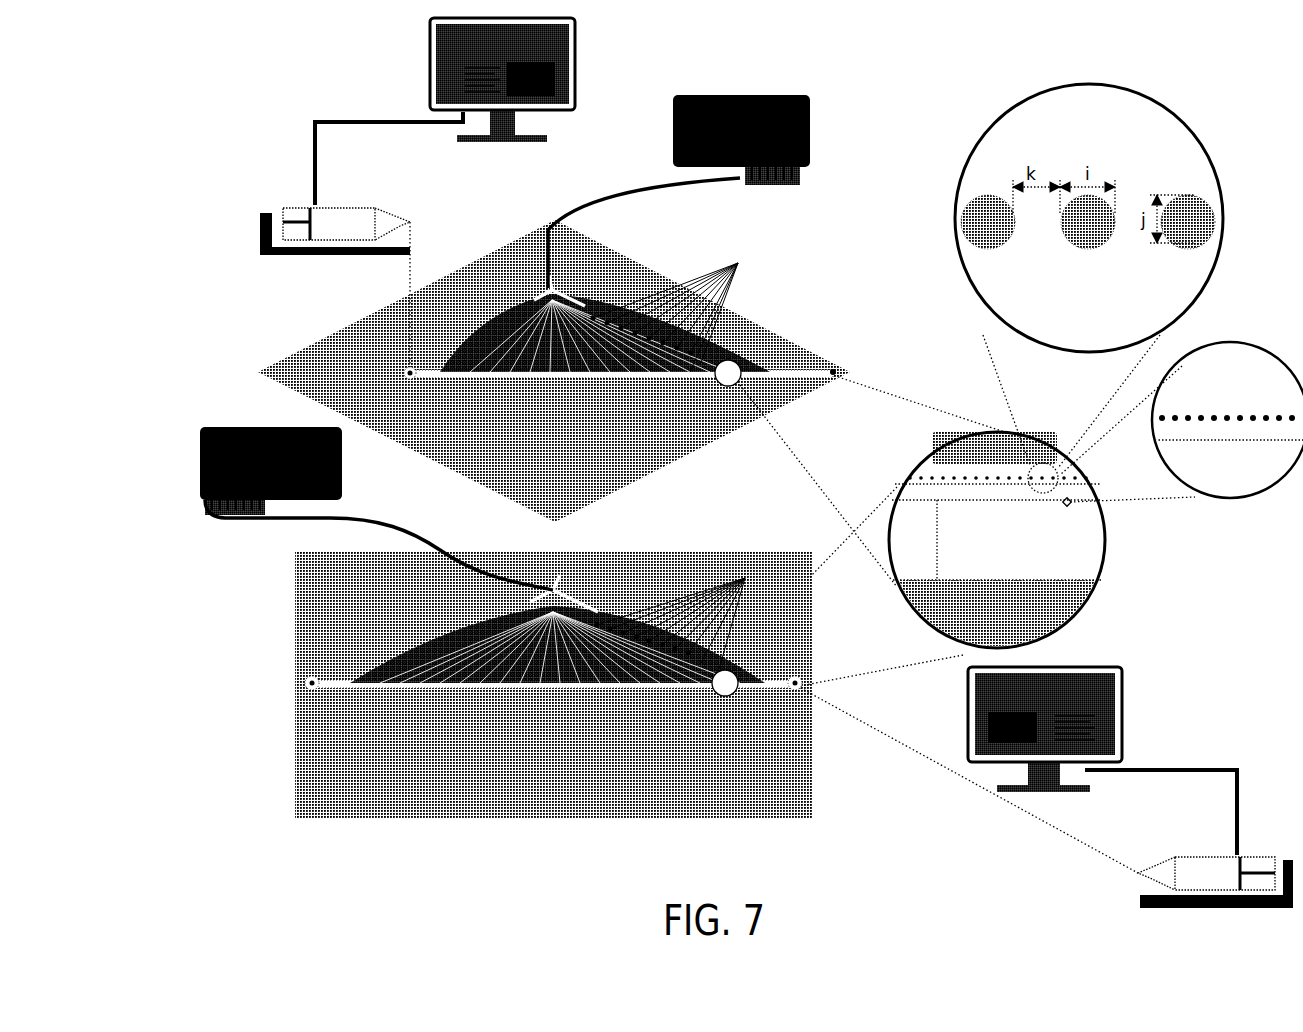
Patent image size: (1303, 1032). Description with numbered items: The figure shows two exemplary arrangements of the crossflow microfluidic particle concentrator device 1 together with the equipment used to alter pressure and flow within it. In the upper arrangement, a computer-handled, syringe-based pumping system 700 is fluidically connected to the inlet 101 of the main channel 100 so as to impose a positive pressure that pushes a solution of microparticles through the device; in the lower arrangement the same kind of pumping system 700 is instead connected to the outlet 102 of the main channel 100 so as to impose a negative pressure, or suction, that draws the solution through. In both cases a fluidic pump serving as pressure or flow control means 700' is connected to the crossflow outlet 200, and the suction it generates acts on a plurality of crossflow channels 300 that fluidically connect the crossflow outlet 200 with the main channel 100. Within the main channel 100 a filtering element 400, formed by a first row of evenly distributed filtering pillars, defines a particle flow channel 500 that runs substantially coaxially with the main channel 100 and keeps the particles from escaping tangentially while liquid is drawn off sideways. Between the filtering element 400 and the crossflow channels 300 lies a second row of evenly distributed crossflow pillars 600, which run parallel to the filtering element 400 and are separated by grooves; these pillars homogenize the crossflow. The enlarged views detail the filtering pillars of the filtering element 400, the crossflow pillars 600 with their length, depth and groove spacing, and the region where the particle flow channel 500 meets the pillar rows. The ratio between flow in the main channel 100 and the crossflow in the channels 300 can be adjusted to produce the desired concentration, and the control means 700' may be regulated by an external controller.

The crossflow microfluidic particle concentrator device 1 is at (271, 343).
The main channel 100 is at (377, 541).
The inlet 101 is at (405, 369).
The outlet 102 is at (838, 369).
The crossflow outlet 200 is at (556, 286).
The crossflow channels 300 is at (688, 468).
The filtering element 400 is at (1105, 420).
The particle flow channel 500 is at (708, 529).
The crossflow pillars 600 is at (906, 528).
The pressure means 700 is at (765, 463).
The pressure or flow control means 700' is at (467, 272).